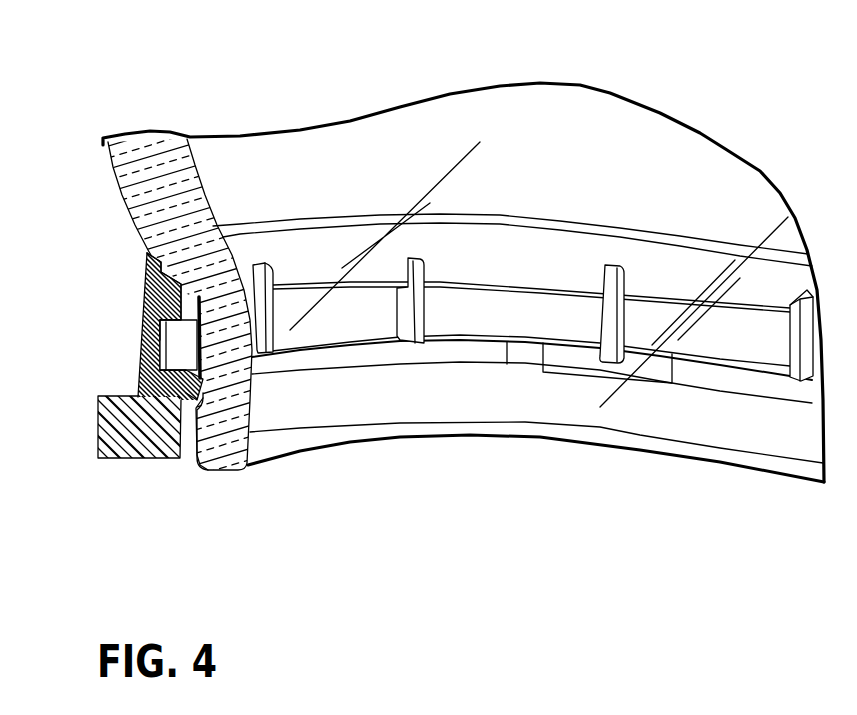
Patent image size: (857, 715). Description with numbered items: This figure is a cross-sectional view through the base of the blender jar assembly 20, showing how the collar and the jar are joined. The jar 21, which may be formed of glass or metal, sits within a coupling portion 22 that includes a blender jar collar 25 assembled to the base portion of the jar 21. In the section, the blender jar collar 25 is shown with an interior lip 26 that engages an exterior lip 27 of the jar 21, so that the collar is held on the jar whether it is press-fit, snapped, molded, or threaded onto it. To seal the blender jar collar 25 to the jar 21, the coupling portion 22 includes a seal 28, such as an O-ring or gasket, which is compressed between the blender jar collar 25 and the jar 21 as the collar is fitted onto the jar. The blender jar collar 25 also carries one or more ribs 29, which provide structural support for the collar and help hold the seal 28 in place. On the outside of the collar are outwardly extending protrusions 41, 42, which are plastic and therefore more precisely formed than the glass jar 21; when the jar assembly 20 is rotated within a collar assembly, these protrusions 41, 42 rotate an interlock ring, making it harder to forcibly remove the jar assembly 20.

The jar assembly 20 is at (109, 49).
The jar 21 is at (152, 163).
The coupling portion 22 is at (116, 323).
The blender jar collar 25 is at (325, 250).
The interior lip 26 is at (192, 388).
The exterior lip 27 is at (193, 418).
The seal 28 is at (147, 290).
The rib 29 is at (421, 320).
The protrusion 41 is at (111, 429).
The protrusion 42 is at (108, 430).